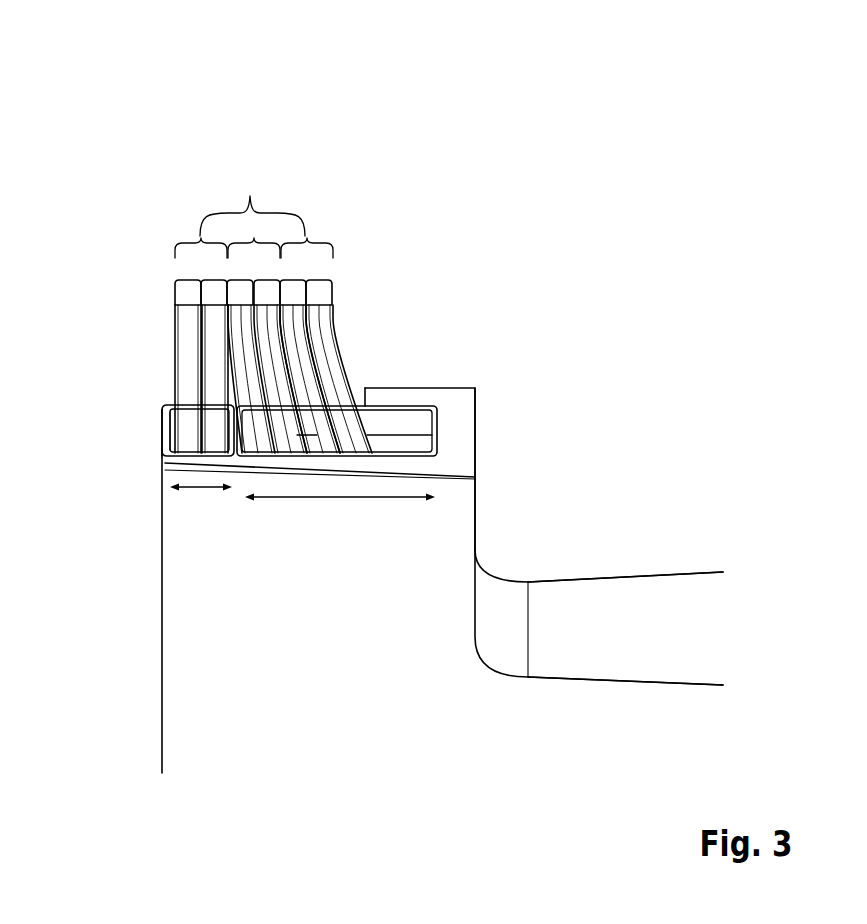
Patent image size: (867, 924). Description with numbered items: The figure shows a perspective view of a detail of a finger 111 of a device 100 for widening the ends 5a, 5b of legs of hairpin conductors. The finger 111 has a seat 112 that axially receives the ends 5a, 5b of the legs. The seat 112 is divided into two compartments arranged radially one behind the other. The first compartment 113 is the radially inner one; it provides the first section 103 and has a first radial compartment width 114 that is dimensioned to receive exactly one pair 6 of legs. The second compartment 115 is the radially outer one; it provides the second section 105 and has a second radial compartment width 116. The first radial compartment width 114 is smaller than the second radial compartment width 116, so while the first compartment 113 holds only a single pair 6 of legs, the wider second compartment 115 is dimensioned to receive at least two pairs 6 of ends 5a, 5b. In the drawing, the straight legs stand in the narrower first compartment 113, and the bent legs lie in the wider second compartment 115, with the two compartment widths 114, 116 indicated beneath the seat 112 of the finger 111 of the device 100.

The device 100 is at (112, 107).
The pair of legs 6 is at (301, 310).
The end of leg 5a is at (357, 442).
The end of leg 5b is at (373, 430).
The first section 103 is at (182, 427).
The first compartment 113 is at (170, 430).
The second compartment 115 is at (410, 427).
The second section 105 is at (429, 418).
The first radial compartment width 114 is at (203, 488).
The second radial compartment width 116 is at (348, 498).
The seat 112 is at (448, 544).
The finger 111 is at (636, 595).